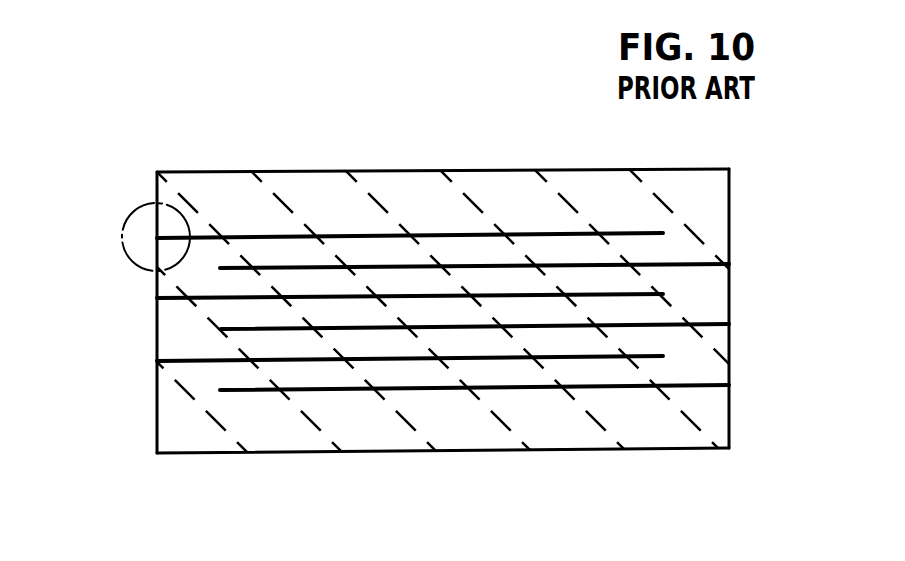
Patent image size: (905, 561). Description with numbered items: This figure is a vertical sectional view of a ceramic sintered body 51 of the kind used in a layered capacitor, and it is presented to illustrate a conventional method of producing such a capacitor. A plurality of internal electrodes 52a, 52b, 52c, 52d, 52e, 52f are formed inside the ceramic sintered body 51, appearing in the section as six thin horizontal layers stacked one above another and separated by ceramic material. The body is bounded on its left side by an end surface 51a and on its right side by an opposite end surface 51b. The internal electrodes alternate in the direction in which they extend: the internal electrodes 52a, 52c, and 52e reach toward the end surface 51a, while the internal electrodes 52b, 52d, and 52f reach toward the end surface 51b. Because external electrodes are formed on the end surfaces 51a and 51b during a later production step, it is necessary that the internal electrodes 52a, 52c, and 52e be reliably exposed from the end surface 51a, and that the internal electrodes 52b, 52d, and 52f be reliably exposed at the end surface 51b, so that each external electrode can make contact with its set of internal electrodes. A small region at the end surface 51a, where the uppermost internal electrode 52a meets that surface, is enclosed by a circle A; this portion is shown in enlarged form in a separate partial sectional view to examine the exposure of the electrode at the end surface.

The ceramic sintered body 51 is at (212, 165).
The end surface 51a is at (157, 393).
The end surface 51b is at (729, 368).
The internal electrode 52a is at (328, 235).
The internal electrode 52b is at (403, 235).
The internal electrode 52c is at (503, 235).
The internal electrode 52d is at (368, 330).
The internal electrode 52e is at (492, 357).
The internal electrode 52f is at (604, 388).
The circle A is at (133, 260).